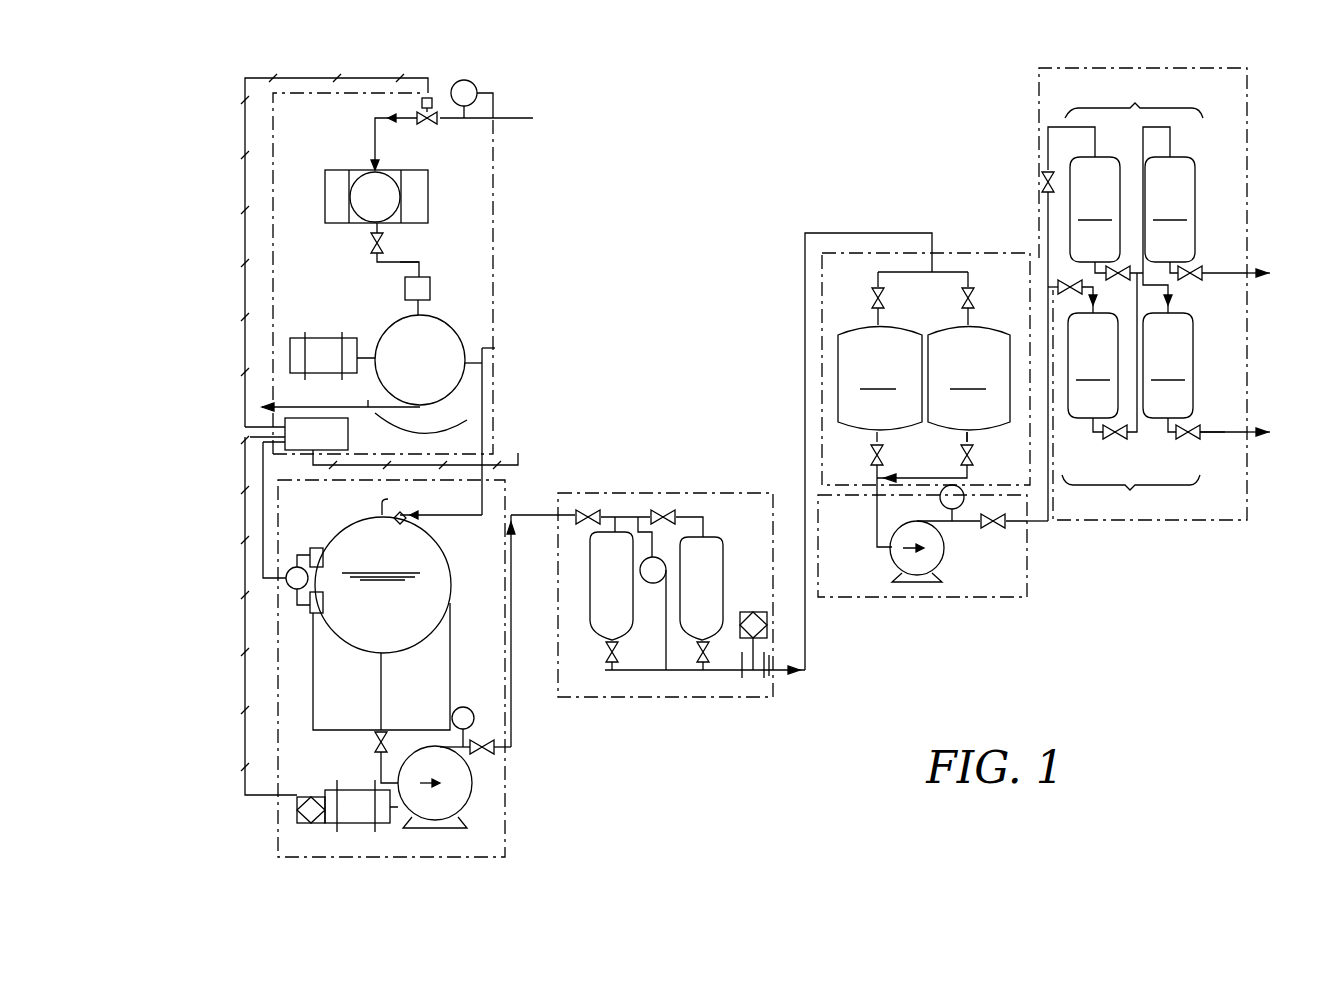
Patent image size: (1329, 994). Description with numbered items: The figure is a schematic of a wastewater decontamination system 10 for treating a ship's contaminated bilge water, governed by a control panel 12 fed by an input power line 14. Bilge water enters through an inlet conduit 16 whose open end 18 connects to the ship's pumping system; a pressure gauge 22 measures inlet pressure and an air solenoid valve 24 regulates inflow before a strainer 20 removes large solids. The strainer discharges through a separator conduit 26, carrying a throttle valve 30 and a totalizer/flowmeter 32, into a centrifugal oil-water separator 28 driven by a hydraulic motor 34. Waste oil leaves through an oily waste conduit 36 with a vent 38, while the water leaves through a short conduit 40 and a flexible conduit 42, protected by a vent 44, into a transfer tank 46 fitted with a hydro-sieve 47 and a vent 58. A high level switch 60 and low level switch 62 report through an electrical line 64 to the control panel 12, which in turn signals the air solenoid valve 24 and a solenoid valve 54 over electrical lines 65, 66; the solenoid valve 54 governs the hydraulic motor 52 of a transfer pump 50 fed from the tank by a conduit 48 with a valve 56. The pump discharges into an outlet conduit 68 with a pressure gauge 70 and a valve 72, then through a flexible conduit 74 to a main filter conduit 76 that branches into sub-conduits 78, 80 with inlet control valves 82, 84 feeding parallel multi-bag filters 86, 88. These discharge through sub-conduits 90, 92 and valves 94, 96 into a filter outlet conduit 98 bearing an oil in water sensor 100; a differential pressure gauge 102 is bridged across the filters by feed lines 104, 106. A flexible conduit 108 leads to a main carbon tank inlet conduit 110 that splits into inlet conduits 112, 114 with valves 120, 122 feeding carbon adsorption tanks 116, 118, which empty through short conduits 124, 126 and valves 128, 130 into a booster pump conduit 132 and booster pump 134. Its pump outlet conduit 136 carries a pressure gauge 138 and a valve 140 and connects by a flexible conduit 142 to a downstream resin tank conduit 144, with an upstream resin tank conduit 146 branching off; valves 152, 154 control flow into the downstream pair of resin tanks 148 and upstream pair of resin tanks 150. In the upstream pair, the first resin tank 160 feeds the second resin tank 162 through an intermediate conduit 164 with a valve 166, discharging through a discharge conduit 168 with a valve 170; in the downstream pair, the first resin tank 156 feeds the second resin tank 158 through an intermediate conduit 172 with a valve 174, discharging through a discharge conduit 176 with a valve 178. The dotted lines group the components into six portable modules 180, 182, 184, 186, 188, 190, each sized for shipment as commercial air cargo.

The system 10 is at (732, 145).
The control panel 12 is at (250, 436).
The input power line 14 is at (518, 455).
The inlet conduit 16 is at (466, 122).
The open end 18 is at (533, 118).
The strainer 20 is at (325, 193).
The pressure gauge 22 is at (467, 80).
The air solenoid valve 24 is at (430, 100).
The separator conduit 26 is at (405, 262).
The oil-water separator 28 is at (443, 332).
The throttle valve 30 is at (372, 240).
The totalizer/flowmeter 32 is at (405, 287).
The hydraulic motor 34 is at (322, 350).
The oily waste conduit 36 is at (333, 407).
The vent 38 is at (372, 403).
The short conduit 40 is at (470, 363).
The flexible conduit 42 is at (483, 423).
The vent 44 is at (495, 348).
The transfer tank 46 is at (440, 555).
The hydro-sieve 47 is at (403, 512).
The conduit 48 is at (381, 693).
The transfer pump 50 is at (457, 782).
The hydraulic motor 52 is at (360, 823).
The solenoid valve 54 is at (312, 797).
The valve 56 is at (373, 742).
The vent 58 is at (377, 510).
The high level switch 60 is at (312, 550).
The low level switch 62 is at (320, 613).
The electrical line 64 is at (245, 523).
The electrical line 65 is at (245, 238).
The electrical line 66 is at (245, 622).
The outlet conduit 68 is at (502, 755).
The pressure gauge 70 is at (466, 707).
The valve 72 is at (484, 738).
The flexible conduit 74 is at (513, 650).
The main filter conduit 76 is at (538, 515).
The first sub-conduit 78 is at (620, 528).
The second sub-conduit 80 is at (710, 523).
The inlet control valve 82 is at (590, 510).
The inlet control valve 84 is at (665, 510).
The upstream filter 86 is at (600, 550).
The downstream filter 88 is at (707, 540).
The sub-conduit 90 is at (607, 675).
The sub-conduit 92 is at (713, 675).
The valve 94 is at (605, 652).
The valve 96 is at (690, 654).
The filter outlet conduit 98 is at (643, 675).
The oil in water sensor 100 is at (770, 618).
The differential pressure gauge 102 is at (657, 568).
The feed line 104 is at (657, 545).
The feed line 106 is at (662, 618).
The flexible conduit 108 is at (825, 385).
The main carbon tank inlet conduit 110 is at (942, 272).
The inlet conduit 112 is at (868, 283).
The inlet conduit 114 is at (970, 277).
The carbon adsorption tank 116 is at (880, 379).
The carbon adsorption tank 118 is at (969, 379).
The valve 120 is at (870, 307).
The valve 122 is at (963, 303).
The short conduit 124 is at (870, 445).
The short conduit 126 is at (973, 442).
The valve 128 is at (870, 468).
The valve 130 is at (973, 463).
The booster pump conduit 132 is at (873, 502).
The booster pump 134 is at (915, 562).
The pump outlet conduit 136 is at (1048, 545).
The pressure gauge 138 is at (953, 510).
The valve 140 is at (993, 530).
The flexible conduit 142 is at (1032, 530).
The downstream resin tank conduit 144 is at (1057, 283).
The upstream resin tank conduit 146 is at (1058, 290).
The downstream pair of resin tanks 148 is at (1134, 94).
The upstream pair of resin tanks 150 is at (1131, 496).
The valve 152 is at (1047, 170).
The valve 154 is at (1046, 180).
The first resin tank 156 is at (1095, 209).
The second resin tank 158 is at (1170, 209).
The first resin tank 160 is at (1093, 365).
The second resin tank 162 is at (1168, 365).
The intermediate conduit 164 is at (1145, 425).
The valve 166 is at (1113, 440).
The discharge conduit 168 is at (1247, 430).
The valve 170 is at (1200, 437).
The intermediate conduit 172 is at (1140, 148).
The valve 174 is at (1118, 287).
The discharge conduit 176 is at (1248, 273).
The valve 178 is at (1193, 277).
The module 180 is at (494, 194).
The module 182 is at (509, 826).
The module 184 is at (746, 698).
The module 186 is at (886, 254).
The module 188 is at (1006, 600).
The module 190 is at (1190, 525).